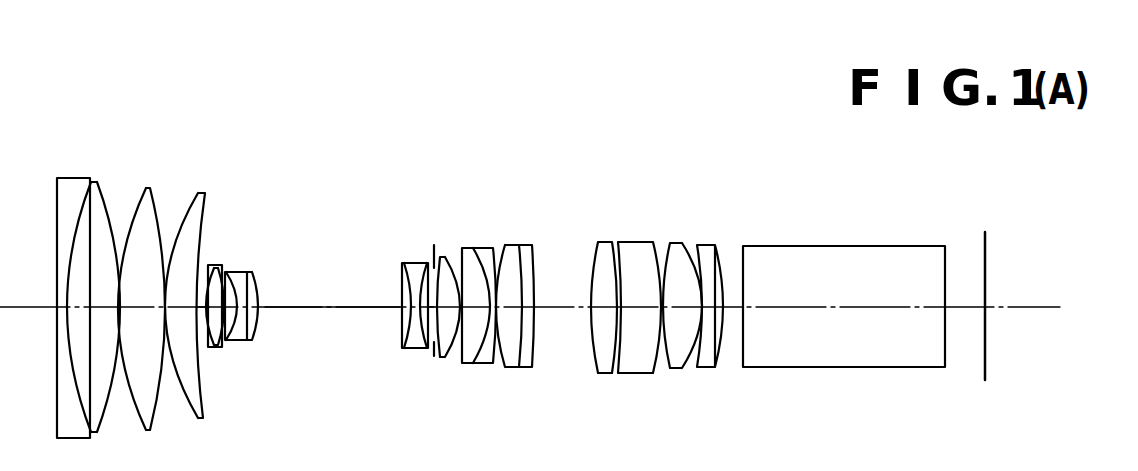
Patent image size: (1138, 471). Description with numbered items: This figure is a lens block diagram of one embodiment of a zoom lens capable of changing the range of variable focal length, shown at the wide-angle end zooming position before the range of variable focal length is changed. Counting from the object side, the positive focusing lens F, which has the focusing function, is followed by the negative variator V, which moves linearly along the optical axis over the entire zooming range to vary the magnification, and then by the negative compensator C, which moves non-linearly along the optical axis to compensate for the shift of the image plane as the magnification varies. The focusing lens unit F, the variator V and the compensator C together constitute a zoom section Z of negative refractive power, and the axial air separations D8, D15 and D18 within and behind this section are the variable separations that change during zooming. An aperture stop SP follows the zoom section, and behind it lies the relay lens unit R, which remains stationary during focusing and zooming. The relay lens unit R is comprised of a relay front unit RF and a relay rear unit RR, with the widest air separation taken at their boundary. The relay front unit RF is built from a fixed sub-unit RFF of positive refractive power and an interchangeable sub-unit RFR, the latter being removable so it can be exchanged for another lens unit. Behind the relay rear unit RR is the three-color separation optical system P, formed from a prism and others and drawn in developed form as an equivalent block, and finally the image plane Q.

The zoom section Z is at (27, 109).
The positive focusing lens F is at (235, 159).
The negative variator V is at (263, 257).
The variable air separation D8 is at (202, 340).
The variable air separation D15 is at (332, 307).
The negative compensator C is at (395, 254).
The variable air separation D18 is at (417, 350).
The aperture stop SP is at (434, 367).
The relay lens unit R is at (745, 107).
The relay front unit RF is at (428, 157).
The fixed sub-unit RFF is at (425, 232).
The interchangeable sub-unit RFR is at (466, 232).
The relay rear unit RR is at (585, 234).
The three-color separation optical system P is at (898, 246).
The image plane Q is at (983, 252).